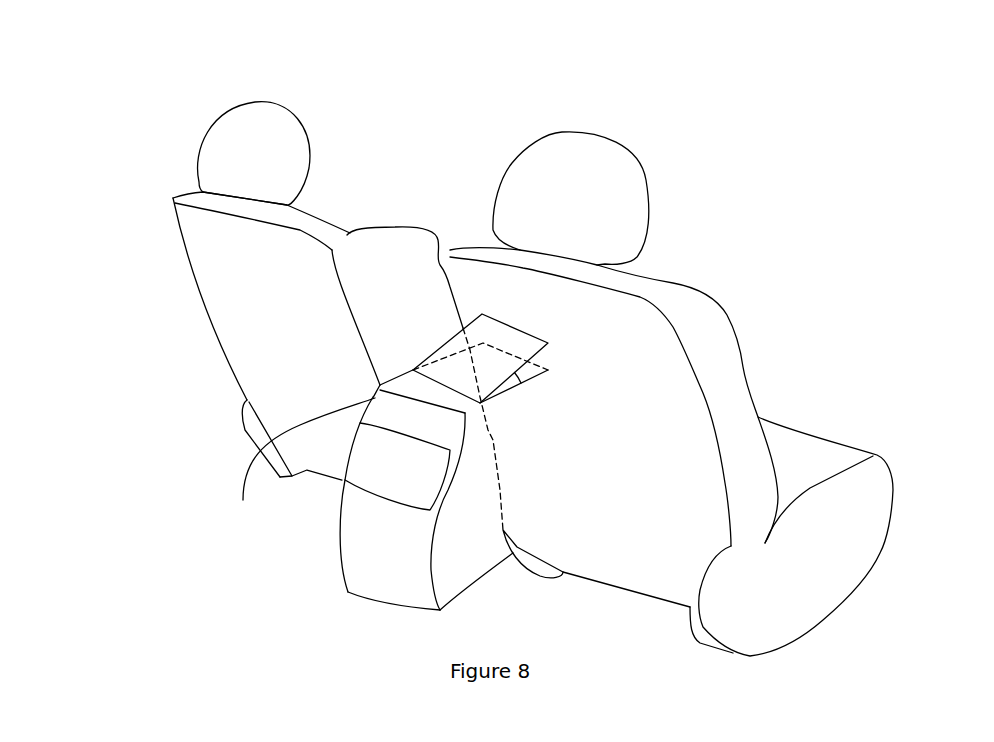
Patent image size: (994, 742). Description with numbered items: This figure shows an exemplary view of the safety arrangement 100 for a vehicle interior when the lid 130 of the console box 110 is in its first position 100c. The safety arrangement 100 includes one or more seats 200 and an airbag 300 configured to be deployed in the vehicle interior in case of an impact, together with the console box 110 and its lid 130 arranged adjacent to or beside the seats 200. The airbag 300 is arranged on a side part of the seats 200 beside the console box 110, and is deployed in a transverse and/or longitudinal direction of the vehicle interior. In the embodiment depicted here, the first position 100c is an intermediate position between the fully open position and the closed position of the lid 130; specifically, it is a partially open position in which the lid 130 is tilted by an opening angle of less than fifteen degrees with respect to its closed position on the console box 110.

The safety arrangement 100 is at (688, 185).
The first position 100c is at (522, 326).
The console box 110 is at (302, 462).
The lid 130 is at (441, 404).
The seats 200 is at (175, 207).
The airbag 300 is at (390, 228).